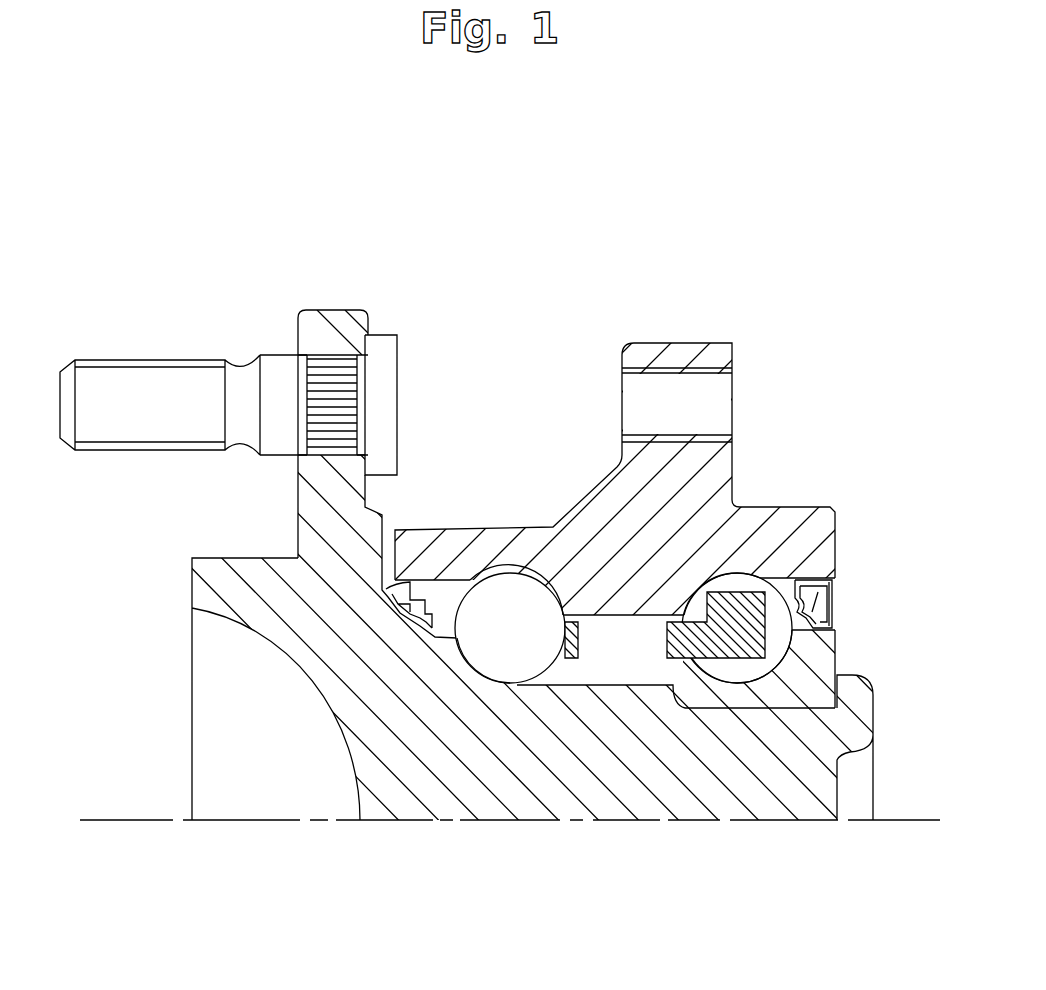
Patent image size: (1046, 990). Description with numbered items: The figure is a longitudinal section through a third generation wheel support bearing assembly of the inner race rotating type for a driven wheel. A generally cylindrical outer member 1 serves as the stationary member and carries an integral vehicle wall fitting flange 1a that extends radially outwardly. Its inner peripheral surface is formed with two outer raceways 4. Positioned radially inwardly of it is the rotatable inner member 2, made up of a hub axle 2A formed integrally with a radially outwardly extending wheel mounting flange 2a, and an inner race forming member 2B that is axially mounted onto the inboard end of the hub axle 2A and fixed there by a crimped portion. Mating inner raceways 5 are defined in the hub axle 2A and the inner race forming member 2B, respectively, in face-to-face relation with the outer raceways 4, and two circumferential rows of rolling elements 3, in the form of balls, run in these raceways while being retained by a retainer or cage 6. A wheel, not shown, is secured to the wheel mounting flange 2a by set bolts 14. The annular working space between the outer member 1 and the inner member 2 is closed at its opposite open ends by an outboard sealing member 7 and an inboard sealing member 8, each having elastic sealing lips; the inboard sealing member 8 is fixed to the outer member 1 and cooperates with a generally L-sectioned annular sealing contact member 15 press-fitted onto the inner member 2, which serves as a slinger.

The outer member 1 is at (528, 525).
The vehicle wall fitting flange 1a is at (684, 343).
The inner member 2 is at (585, 897).
The hub axle 2A is at (607, 793).
The inner race forming member 2B is at (715, 703).
The wheel mounting flange 2a is at (333, 308).
The rolling elements 3 is at (475, 605).
The outer raceways 4 is at (488, 590).
The inner raceways 5 is at (468, 660).
The retainer or cage 6 is at (693, 632).
The outboard sealing member 7 is at (396, 578).
The inboard sealing member 8 is at (804, 575).
The set bolts 14 is at (152, 380).
The annular sealing contact member 15 is at (833, 598).